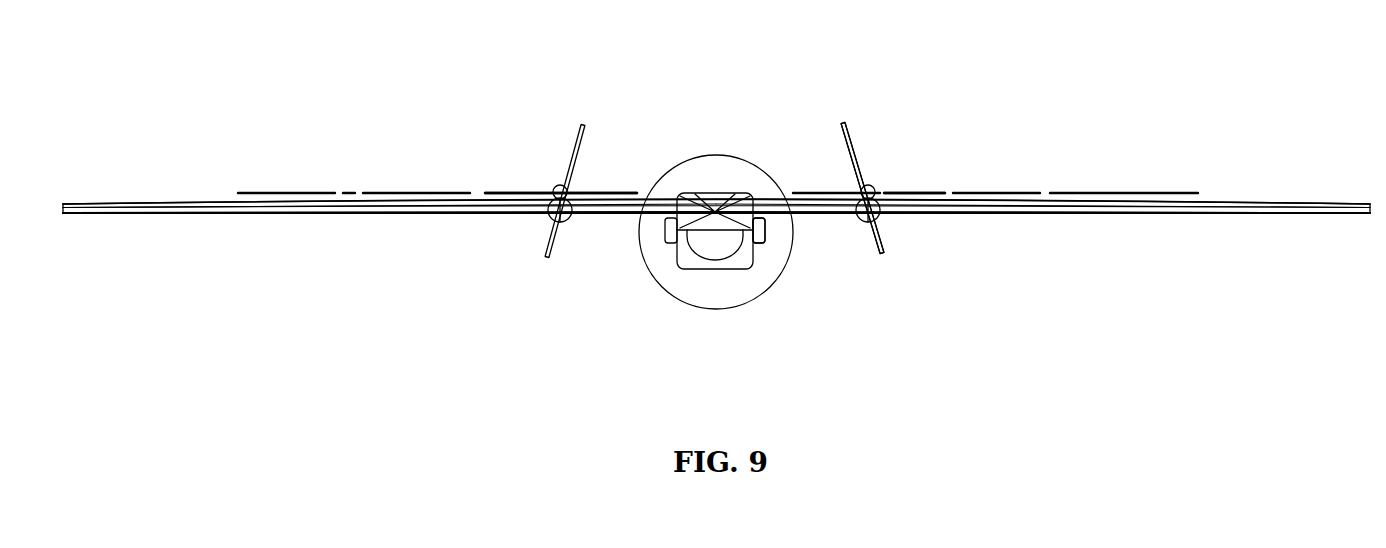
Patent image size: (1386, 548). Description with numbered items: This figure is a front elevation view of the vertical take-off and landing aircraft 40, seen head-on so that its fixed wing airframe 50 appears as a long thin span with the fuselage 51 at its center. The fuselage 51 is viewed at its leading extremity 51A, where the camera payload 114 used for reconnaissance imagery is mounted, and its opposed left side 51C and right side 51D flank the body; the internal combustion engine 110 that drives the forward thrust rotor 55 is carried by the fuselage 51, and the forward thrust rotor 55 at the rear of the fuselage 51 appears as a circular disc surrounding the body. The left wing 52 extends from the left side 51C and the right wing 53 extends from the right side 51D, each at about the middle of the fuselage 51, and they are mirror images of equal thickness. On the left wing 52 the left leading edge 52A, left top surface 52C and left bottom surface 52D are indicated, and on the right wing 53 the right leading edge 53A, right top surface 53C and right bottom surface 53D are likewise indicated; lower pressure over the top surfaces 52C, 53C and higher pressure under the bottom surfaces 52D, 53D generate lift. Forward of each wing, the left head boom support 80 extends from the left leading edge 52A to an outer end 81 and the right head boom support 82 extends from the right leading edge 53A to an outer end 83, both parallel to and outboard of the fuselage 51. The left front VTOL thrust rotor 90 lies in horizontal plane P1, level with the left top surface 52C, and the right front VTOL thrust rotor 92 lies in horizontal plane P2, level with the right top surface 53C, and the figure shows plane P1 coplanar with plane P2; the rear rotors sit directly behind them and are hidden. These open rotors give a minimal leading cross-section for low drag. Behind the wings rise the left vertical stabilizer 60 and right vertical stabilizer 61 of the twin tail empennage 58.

The vertical take-off and landing aircraft 40 is at (978, 72).
The airframe 50 is at (168, 201).
The right wing 53 is at (286, 205).
The right top surface 53C is at (219, 205).
The right bottom surface 53D is at (268, 214).
The right leading edge 53A is at (364, 214).
The left wing 52 is at (1250, 205).
The left top surface 52C is at (1225, 205).
The left bottom surface 52D is at (1165, 214).
The left leading edge 52A is at (1210, 214).
The horizontal plane P2 is at (398, 193).
The horizontal plane P1 is at (1128, 193).
The right front VTOL thrust rotor 92 is at (519, 193).
The left front VTOL thrust rotor 90 is at (912, 193).
The forward thrust rotor 55 is at (694, 160).
The fuselage 51 is at (688, 264).
The leading extremity 51A is at (718, 205).
The right side 51D is at (668, 196).
The left side 51C is at (756, 198).
The camera payload 114 is at (718, 258).
The internal combustion engine 110 is at (765, 238).
The right vertical stabilizer 61 is at (580, 122).
The right head boom support 82 is at (553, 218).
The outer end 83 is at (566, 219).
The empennage 58 is at (848, 120).
The left vertical stabilizer 60 is at (856, 146).
The left head boom support 80 is at (876, 219).
The outer end 81 is at (862, 219).